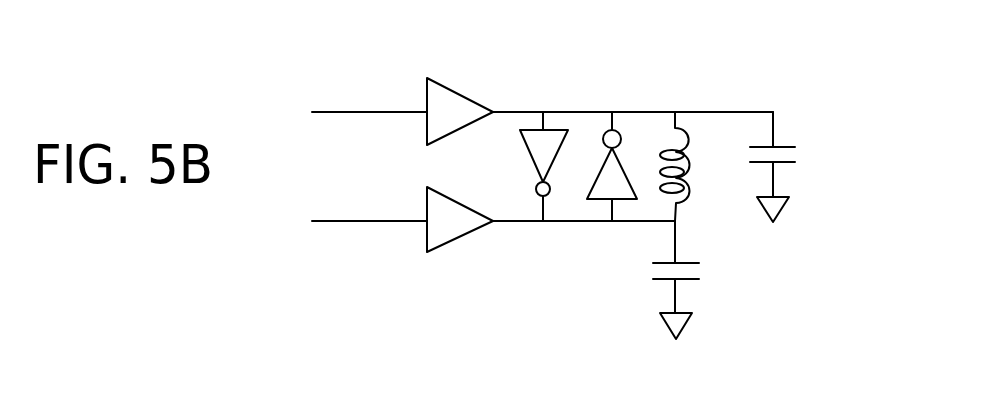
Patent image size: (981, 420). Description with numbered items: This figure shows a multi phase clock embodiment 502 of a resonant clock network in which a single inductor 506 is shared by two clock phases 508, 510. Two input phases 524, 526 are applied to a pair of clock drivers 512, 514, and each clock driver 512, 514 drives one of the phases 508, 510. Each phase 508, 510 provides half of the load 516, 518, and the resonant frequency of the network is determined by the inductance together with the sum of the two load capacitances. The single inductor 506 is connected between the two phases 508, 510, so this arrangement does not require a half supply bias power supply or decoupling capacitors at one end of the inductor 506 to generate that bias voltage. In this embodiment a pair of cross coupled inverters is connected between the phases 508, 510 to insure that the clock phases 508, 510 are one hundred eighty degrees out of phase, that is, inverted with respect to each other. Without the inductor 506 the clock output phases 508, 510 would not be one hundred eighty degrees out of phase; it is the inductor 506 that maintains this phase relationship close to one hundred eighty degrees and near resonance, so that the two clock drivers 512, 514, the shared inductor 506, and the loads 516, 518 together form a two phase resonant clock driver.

The multi phase clock embodiment 502 is at (558, 297).
The single inductor 506 is at (684, 201).
The first phase 508 is at (749, 111).
The second phase 510 is at (580, 222).
The clock driver 512 is at (460, 93).
The clock driver 514 is at (462, 237).
The load 516 is at (778, 143).
The load 518 is at (688, 281).
The input phase 524 is at (380, 118).
The input phase 526 is at (389, 225).